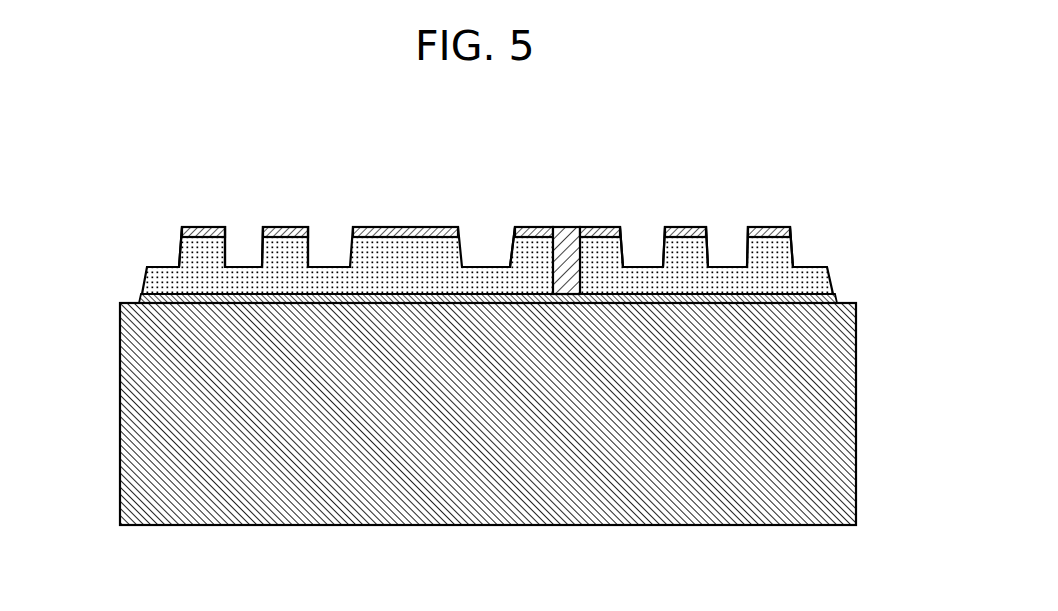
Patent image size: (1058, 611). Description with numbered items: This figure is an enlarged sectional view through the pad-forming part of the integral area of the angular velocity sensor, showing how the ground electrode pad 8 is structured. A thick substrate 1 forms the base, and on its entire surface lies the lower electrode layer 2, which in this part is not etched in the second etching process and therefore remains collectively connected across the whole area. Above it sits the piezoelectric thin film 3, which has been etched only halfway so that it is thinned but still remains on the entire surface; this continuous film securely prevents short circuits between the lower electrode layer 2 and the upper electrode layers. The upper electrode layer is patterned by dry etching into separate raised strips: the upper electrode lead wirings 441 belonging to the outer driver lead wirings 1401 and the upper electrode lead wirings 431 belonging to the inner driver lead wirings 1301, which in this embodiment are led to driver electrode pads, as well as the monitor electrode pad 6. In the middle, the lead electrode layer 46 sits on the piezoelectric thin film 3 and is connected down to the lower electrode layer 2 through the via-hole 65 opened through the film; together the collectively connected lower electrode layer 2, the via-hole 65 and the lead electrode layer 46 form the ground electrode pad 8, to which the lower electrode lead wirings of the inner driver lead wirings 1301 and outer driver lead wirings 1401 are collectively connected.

The substrate 1 is at (848, 440).
The lower electrode layer 2 is at (142, 293).
The piezoelectric thin film 3 is at (188, 257).
The monitor electrode pad 6 is at (408, 232).
The ground electrode pad 8 is at (607, 160).
The lead electrode layer 46 is at (535, 227).
The via-hole 65 is at (567, 252).
The upper electrode lead wirings 431 is at (300, 228).
The upper electrode lead wirings 441 is at (208, 227).
The inner driver lead wirings 1301 is at (357, 166).
The outer driver lead wirings 1401 is at (222, 168).